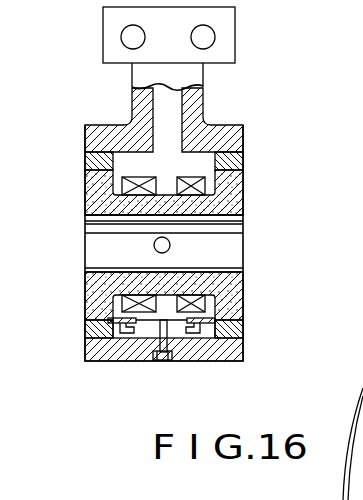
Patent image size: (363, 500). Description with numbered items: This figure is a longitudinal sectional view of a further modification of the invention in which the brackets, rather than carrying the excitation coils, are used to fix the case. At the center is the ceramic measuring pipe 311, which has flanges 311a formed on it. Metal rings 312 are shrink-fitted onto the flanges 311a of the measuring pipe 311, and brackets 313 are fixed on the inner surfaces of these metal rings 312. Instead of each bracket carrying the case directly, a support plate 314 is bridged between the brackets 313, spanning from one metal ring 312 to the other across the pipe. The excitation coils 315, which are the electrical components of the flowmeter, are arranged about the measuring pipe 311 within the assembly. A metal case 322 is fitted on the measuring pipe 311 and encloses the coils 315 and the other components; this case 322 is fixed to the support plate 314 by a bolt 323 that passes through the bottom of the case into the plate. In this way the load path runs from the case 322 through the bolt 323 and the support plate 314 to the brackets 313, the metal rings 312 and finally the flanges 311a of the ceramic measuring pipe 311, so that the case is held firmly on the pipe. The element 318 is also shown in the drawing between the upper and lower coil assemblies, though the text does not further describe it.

The ceramic measuring pipe 311 is at (80, 205).
The flange 311a is at (85, 195).
The metal ring 312 is at (85, 163).
The bracket 313 is at (85, 298).
The support plate 314 is at (142, 325).
The excitation coil 315 is at (208, 172).
The ball 318 is at (170, 250).
The case 322 is at (222, 127).
The bolt 323 is at (165, 358).